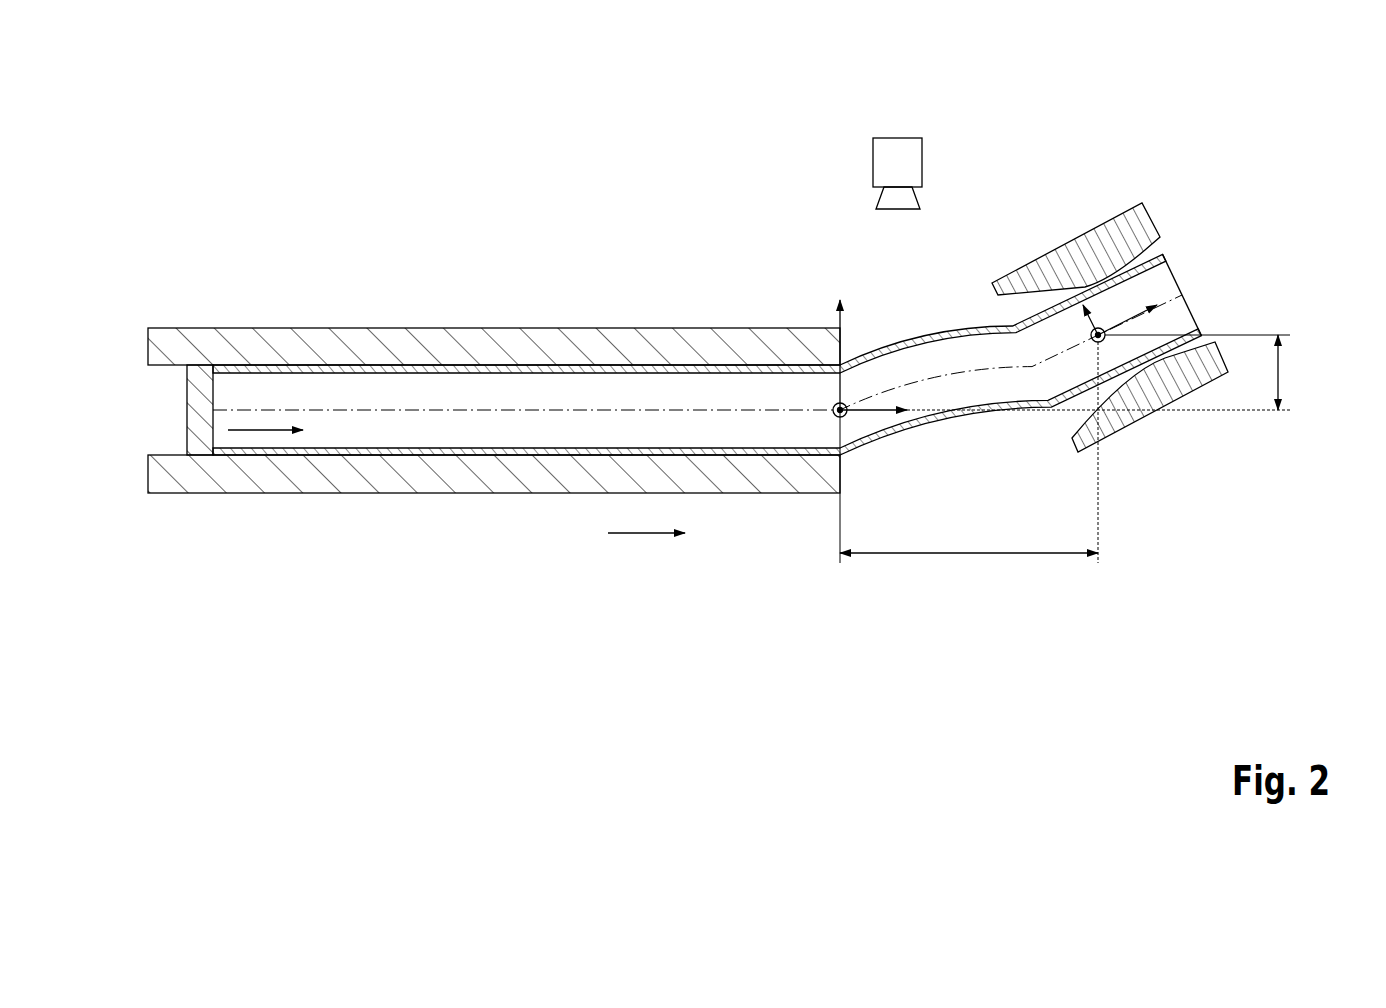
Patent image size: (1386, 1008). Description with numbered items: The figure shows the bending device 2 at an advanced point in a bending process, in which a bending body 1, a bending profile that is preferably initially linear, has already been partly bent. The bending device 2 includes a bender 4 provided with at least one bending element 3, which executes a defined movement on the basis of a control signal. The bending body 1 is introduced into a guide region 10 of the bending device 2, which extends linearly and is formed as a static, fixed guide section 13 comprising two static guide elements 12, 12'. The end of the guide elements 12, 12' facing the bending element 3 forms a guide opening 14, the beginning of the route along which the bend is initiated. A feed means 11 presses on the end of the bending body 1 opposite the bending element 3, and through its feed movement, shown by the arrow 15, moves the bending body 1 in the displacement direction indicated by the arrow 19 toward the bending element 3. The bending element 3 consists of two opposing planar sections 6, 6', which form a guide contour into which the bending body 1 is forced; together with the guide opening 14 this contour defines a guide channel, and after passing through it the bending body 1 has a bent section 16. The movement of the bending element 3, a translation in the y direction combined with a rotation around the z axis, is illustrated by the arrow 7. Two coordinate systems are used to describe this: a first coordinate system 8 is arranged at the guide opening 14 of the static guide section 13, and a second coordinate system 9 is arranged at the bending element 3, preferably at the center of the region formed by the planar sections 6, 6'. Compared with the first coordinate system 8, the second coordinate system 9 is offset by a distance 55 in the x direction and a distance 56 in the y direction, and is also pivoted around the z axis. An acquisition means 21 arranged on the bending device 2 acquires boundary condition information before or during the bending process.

The bending body 1 is at (369, 388).
The bending device 2 is at (163, 212).
The bending element 3 is at (1125, 206).
The bender 4 is at (1104, 104).
The planar section 6 is at (1201, 283).
The planar section 6' is at (1175, 302).
The arrow 7 is at (1143, 430).
The first coordinate system 8 is at (838, 275).
The second coordinate system 9 is at (1043, 238).
The guide region 10 is at (418, 540).
The feed means 11 is at (192, 400).
The guide element 12 is at (494, 514).
The guide element 12' is at (494, 307).
The static guide section 13 is at (480, 285).
The guide opening 14 is at (856, 356).
The arrow 15 is at (258, 432).
The bent section 16 is at (964, 345).
The arrow 19 is at (637, 535).
The acquisition means 21 is at (902, 150).
The distance 55 is at (957, 556).
The distance 56 is at (1283, 372).